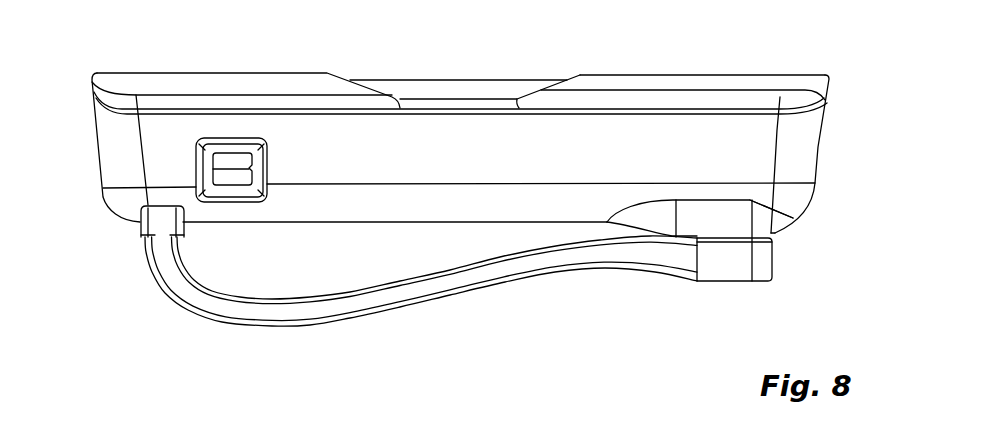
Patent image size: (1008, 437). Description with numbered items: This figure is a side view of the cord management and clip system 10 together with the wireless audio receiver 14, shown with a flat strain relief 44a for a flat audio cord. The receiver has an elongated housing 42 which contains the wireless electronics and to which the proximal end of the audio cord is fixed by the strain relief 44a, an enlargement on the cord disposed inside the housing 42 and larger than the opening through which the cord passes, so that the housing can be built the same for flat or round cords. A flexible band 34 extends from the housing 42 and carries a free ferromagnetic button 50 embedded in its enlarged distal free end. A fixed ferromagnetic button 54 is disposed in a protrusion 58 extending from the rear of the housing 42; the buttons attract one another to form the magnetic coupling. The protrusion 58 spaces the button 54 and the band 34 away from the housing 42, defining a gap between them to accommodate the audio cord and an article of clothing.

The cord management and clip system 10 is at (465, 196).
The wireless audio receiver 14 is at (280, 67).
The housing 42 is at (680, 73).
The strain relief 44a is at (227, 168).
The flexible band 34 is at (450, 297).
The free ferromagnetic button 50 is at (727, 262).
The fixed ferromagnetic button 54 is at (737, 218).
The protrusion 58 is at (717, 215).